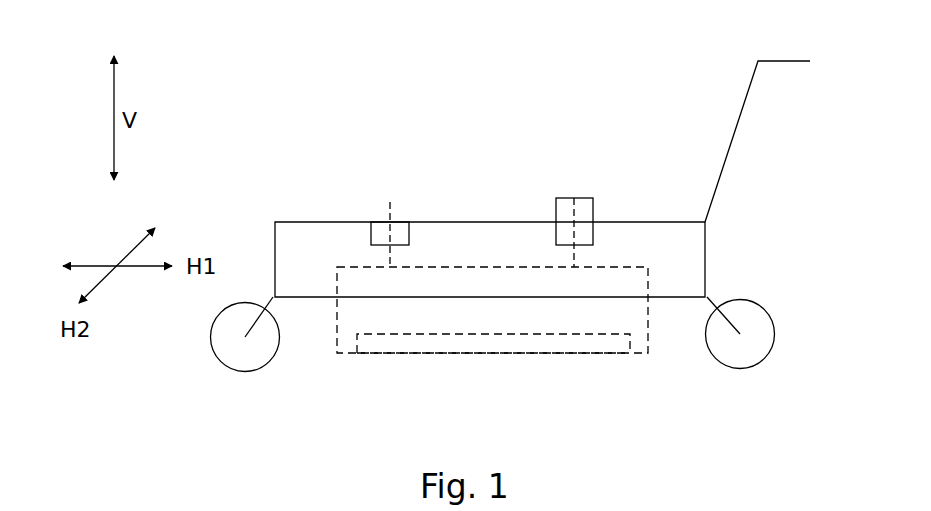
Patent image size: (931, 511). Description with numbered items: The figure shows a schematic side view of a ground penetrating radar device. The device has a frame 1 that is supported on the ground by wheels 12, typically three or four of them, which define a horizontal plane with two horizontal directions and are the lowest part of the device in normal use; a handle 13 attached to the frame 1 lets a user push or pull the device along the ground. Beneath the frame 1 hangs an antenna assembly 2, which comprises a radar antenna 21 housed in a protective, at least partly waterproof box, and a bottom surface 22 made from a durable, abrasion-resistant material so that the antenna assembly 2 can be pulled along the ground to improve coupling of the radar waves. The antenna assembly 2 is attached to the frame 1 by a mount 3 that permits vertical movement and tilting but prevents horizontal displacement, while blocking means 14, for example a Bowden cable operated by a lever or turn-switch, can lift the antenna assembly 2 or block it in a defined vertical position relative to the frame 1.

The frame 1 is at (638, 205).
The antenna assembly 2 is at (543, 318).
The mount 3 is at (553, 228).
The wheels 12 is at (225, 352).
The handle 13 is at (732, 86).
The blocking means 14 is at (555, 197).
The radar antenna 21 is at (492, 344).
The bottom surface 22 is at (413, 359).